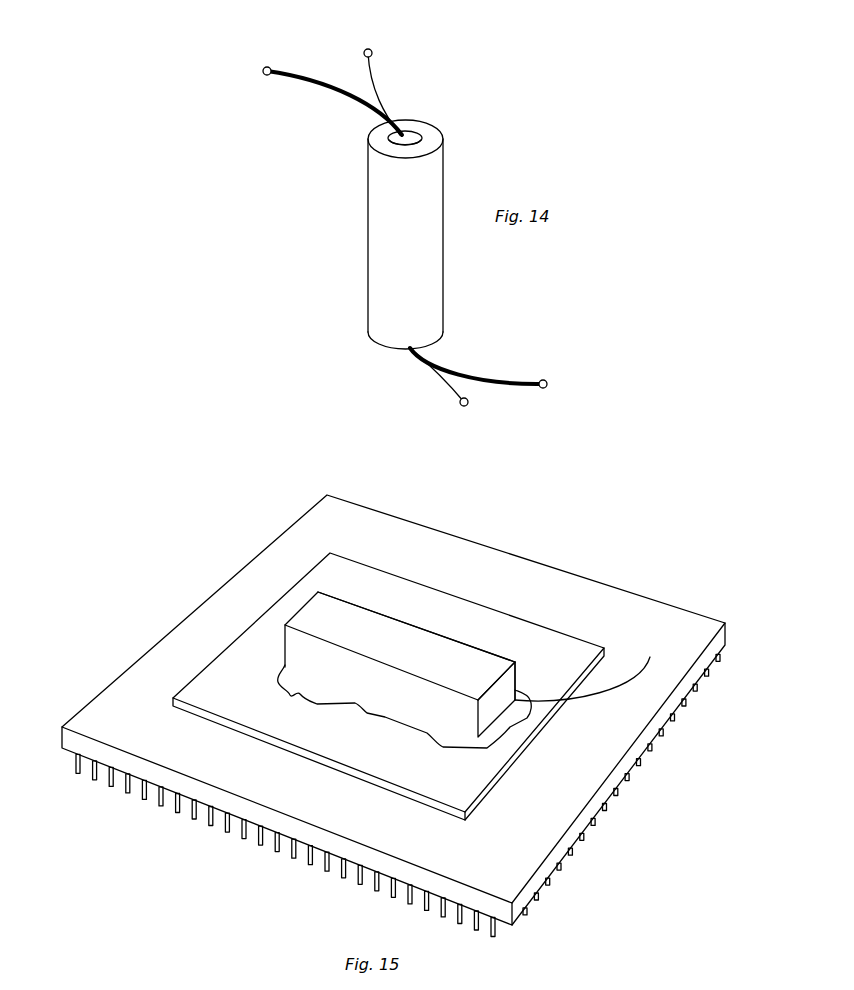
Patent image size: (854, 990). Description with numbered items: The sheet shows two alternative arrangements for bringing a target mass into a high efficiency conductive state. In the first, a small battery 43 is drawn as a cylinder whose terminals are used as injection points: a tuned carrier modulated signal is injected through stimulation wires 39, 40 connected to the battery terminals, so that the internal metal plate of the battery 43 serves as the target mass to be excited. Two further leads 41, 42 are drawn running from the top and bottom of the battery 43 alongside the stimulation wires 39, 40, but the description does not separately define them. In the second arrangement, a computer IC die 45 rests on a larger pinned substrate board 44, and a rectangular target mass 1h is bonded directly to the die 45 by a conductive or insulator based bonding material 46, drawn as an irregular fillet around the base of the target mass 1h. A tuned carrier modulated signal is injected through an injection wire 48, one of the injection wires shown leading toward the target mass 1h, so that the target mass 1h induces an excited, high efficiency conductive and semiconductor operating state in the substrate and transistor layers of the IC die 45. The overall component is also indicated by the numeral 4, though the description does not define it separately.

In FIG. 14, the stimulation wire 39 is at (372, 52).
In FIG. 14, the stimulation wire 40 is at (470, 407).
In FIG. 14, the lead wire 41 is at (260, 68).
In FIG. 14, the lead wire 42 is at (549, 389).
In FIG. 14, the small battery 43 is at (452, 176).
In FIG. 15, the electronic component 4 is at (287, 627).
In FIG. 15, the target mass 1h is at (523, 668).
In FIG. 15, the substrate board with pins 44 is at (492, 543).
In FIG. 15, the computer IC die 45 is at (492, 601).
In FIG. 15, the bonding material 46 is at (394, 722).
In FIG. 15, the injection wire 48 is at (655, 650).